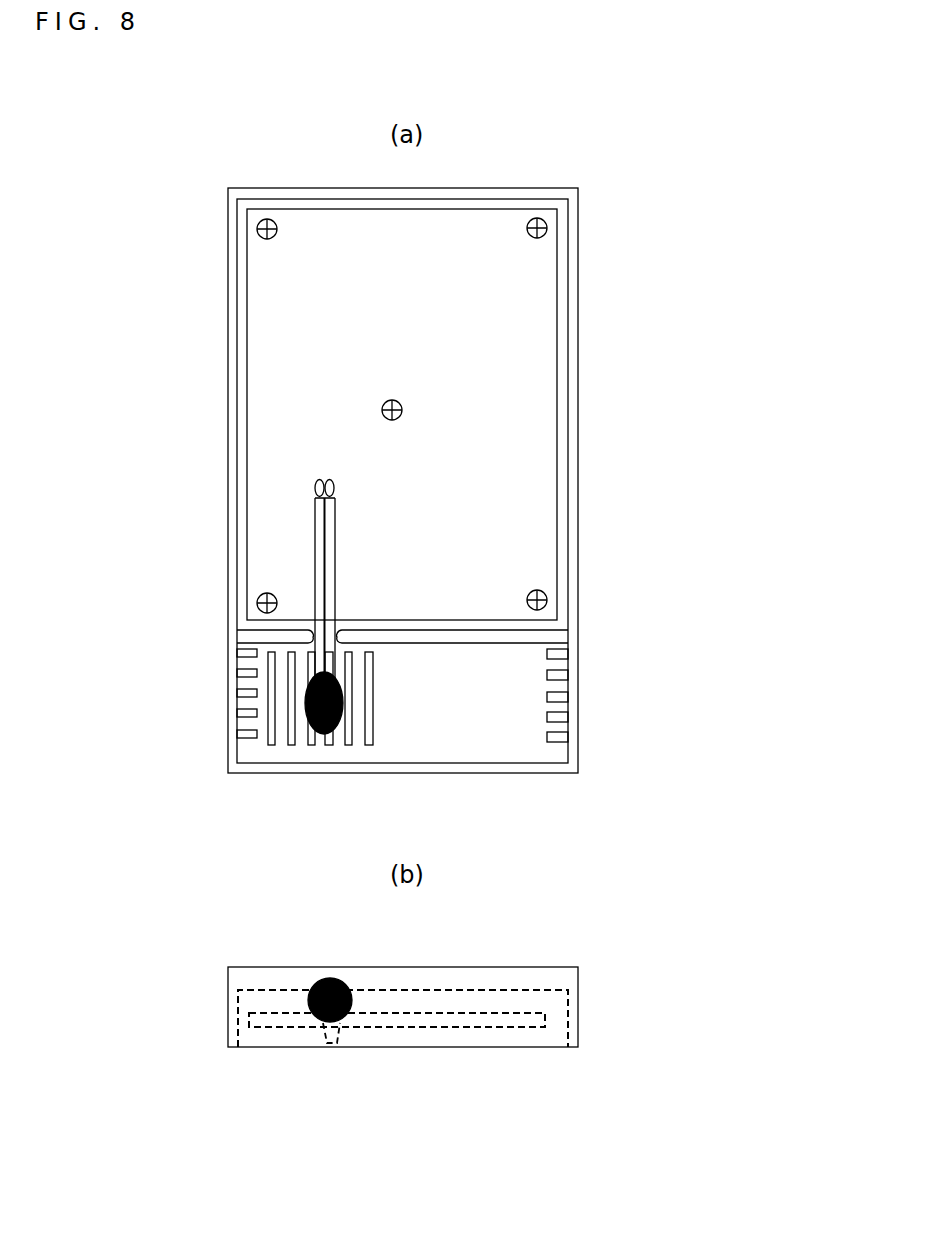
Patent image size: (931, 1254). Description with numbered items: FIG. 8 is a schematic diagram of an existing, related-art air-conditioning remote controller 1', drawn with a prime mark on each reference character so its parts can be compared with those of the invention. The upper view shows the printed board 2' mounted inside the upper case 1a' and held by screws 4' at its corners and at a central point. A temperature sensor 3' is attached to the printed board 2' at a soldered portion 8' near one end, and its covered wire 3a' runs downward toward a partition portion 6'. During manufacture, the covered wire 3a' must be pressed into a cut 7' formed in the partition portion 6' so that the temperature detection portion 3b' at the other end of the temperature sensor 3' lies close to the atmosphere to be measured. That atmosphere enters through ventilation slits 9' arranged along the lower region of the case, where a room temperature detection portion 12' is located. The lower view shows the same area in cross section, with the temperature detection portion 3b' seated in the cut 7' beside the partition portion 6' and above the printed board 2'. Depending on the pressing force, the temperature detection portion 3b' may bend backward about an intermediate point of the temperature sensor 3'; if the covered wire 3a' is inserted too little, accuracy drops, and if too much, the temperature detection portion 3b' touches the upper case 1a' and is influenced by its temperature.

The air-conditioning remote controller 1' is at (412, 445).
The upper case 1a' is at (450, 478).
The printed board 2' is at (438, 628).
The screw 4' is at (446, 383).
The soldered portion 8' is at (375, 468).
The temperature sensor 3' is at (370, 578).
The covered wire 3a' is at (383, 589).
The partition portion 6' is at (402, 781).
The cut 7' is at (365, 799).
The temperature detection portion 3b' is at (397, 876).
The ventilation slit 9' is at (453, 734).
The room temperature detection portion 12' is at (581, 689).